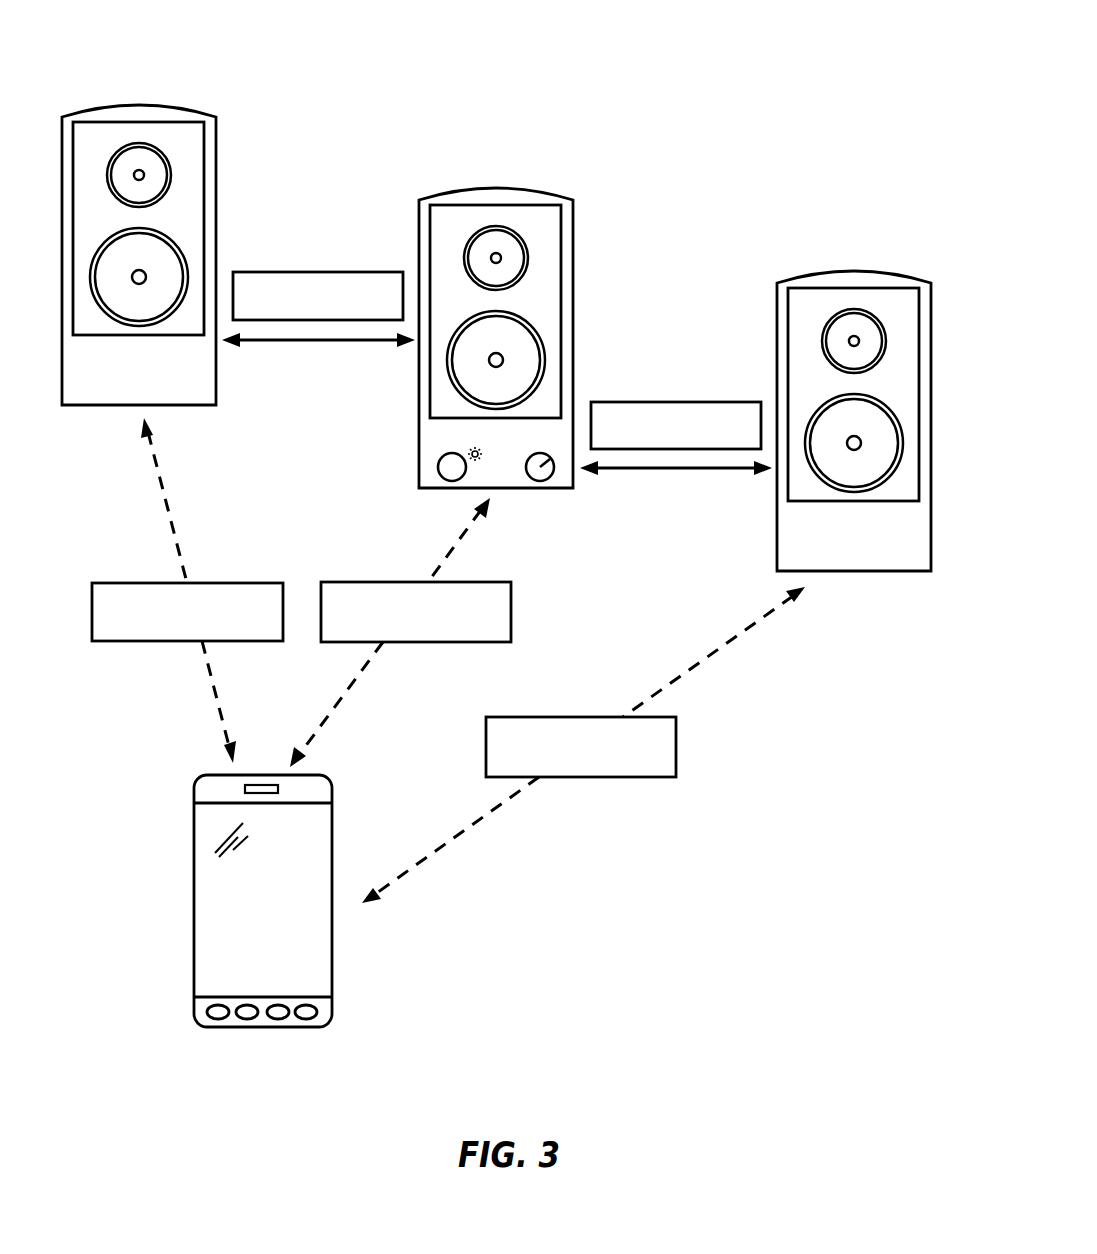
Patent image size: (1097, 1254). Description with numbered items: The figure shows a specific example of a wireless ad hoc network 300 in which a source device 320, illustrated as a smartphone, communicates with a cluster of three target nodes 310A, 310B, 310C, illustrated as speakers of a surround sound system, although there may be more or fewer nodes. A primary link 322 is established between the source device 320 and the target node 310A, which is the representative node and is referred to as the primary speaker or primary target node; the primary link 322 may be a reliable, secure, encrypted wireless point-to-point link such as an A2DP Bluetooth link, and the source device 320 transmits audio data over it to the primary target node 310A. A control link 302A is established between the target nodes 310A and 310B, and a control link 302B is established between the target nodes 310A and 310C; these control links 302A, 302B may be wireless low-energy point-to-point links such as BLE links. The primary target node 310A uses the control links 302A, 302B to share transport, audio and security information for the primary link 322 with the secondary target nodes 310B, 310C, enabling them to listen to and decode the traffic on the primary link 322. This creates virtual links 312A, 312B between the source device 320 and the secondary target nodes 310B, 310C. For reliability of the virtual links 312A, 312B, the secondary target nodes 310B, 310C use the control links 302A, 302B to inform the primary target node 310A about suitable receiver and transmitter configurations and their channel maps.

The wireless ad hoc network 300 is at (845, 35).
The primary target node 310A is at (494, 188).
The secondary target node 310B is at (139, 104).
The secondary target node 310C is at (854, 271).
The control link 302A is at (311, 272).
The control link 302B is at (667, 402).
The virtual link 312A is at (165, 641).
The virtual link 312B is at (603, 777).
The primary link 322 is at (471, 582).
The source device 320 is at (274, 1027).